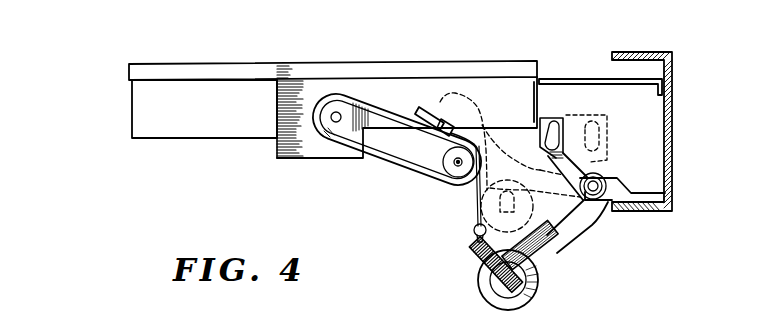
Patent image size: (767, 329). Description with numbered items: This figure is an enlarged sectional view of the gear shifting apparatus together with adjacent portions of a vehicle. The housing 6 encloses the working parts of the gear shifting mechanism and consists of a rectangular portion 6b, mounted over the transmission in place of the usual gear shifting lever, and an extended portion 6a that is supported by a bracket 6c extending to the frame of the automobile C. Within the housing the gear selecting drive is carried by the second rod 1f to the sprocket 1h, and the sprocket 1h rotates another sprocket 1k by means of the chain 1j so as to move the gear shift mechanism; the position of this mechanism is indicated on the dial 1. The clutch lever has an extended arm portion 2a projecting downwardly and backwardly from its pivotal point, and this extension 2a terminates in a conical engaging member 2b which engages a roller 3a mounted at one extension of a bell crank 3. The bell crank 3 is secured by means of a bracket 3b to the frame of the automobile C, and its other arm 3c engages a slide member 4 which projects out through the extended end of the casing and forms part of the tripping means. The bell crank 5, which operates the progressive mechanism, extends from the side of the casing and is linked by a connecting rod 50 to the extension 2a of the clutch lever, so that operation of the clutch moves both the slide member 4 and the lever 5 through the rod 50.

The rectangular portion 6b is at (258, 44).
The housing 6 is at (420, 87).
The extended portion 6a is at (488, 67).
The bracket 6c is at (572, 80).
The bell crank 5 is at (440, 108).
The connecting rod 50 is at (477, 213).
The slide member 4 is at (542, 118).
The bell crank 3 is at (583, 222).
The other arm 3c is at (580, 162).
The bracket 3b is at (603, 203).
The roller 3a is at (540, 258).
The frame of the automobile C is at (673, 132).
The extended arm portion 2a is at (475, 252).
The conical engaging member 2b is at (522, 297).
The dial 1 is at (363, 148).
The chain 1j is at (397, 133).
The sprocket 1k is at (336, 125).
The sprocket 1h is at (443, 163).
The second rod 1f is at (467, 170).